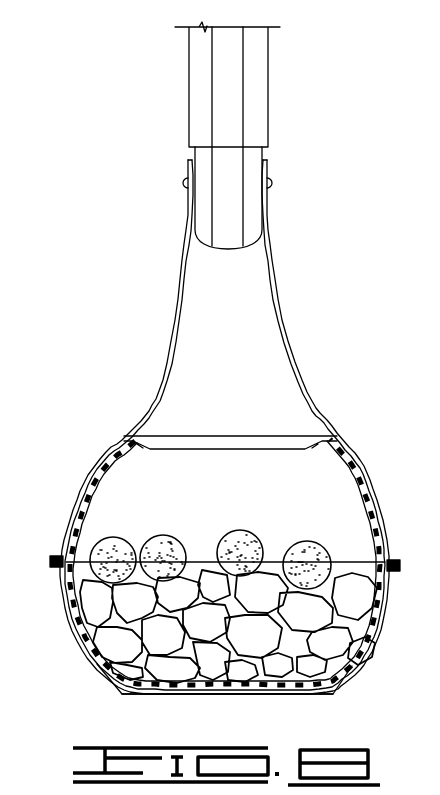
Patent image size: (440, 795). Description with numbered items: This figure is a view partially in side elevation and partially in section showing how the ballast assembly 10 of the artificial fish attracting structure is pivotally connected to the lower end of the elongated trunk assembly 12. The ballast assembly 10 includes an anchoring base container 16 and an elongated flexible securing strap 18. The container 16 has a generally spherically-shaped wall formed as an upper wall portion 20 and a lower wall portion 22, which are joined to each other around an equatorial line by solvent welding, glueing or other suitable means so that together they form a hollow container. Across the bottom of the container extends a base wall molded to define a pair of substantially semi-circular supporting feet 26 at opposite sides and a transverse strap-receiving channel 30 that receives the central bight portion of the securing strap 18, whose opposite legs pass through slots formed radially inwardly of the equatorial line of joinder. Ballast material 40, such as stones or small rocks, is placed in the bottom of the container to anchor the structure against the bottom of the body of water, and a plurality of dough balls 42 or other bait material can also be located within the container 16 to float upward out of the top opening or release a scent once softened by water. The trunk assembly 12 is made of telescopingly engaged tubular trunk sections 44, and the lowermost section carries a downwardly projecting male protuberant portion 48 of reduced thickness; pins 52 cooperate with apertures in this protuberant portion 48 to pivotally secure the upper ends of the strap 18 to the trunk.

The ballast assembly 10 is at (225, 403).
The trunk assembly 12 is at (236, 155).
The anchoring base container 16 is at (193, 433).
The securing strap 18 is at (283, 336).
The upper wall portion 20 is at (86, 478).
The lower wall portion 22 is at (383, 626).
The supporting foot 26 is at (121, 688).
The strap-receiving channel 30 is at (296, 688).
The ballast material 40 is at (360, 606).
The dough balls 42 is at (250, 546).
The trunk section 44 is at (222, 54).
The male protuberant portion 48 is at (227, 240).
The pin 52 is at (185, 183).